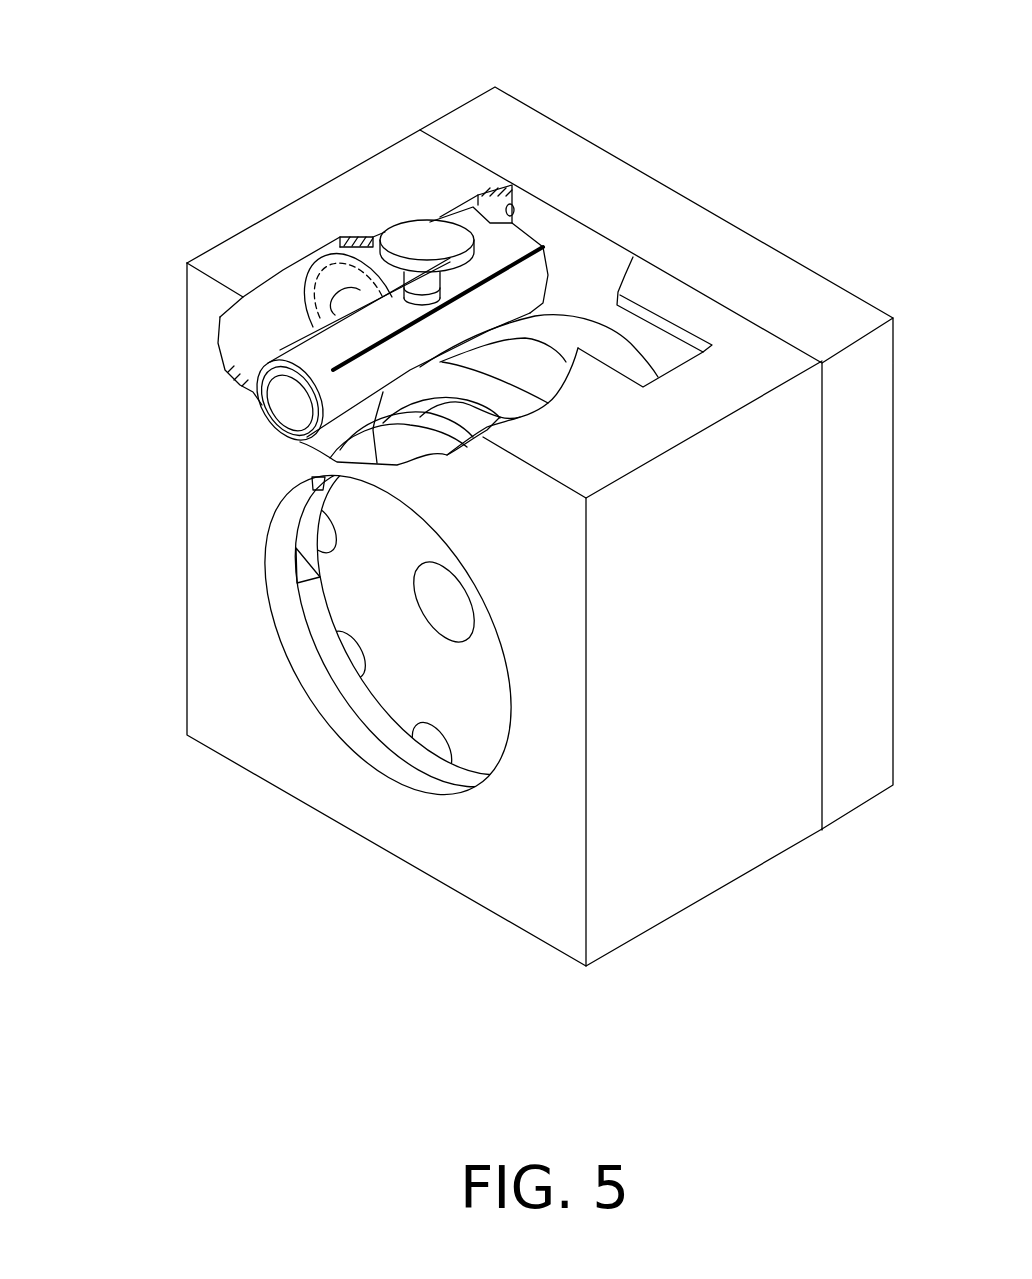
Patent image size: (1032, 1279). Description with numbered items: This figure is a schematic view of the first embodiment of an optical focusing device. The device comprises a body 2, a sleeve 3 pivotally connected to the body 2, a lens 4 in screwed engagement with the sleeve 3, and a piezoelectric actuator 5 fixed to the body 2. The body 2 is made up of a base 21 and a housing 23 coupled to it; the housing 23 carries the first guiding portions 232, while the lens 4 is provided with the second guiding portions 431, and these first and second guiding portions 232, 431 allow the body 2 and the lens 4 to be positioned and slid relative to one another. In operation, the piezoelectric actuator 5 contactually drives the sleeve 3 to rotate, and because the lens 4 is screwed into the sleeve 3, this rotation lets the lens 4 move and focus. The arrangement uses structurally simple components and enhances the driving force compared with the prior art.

The body 2 is at (553, 592).
The base 21 is at (852, 782).
The housing 23 is at (727, 860).
The first guiding portions 232 is at (320, 571).
The sleeve 3 is at (563, 337).
The lens 4 is at (416, 641).
The second guiding portions 431 is at (305, 530).
The piezoelectric actuator 5 is at (521, 258).